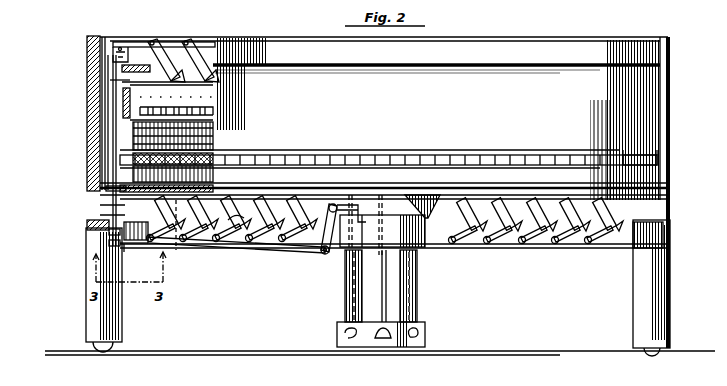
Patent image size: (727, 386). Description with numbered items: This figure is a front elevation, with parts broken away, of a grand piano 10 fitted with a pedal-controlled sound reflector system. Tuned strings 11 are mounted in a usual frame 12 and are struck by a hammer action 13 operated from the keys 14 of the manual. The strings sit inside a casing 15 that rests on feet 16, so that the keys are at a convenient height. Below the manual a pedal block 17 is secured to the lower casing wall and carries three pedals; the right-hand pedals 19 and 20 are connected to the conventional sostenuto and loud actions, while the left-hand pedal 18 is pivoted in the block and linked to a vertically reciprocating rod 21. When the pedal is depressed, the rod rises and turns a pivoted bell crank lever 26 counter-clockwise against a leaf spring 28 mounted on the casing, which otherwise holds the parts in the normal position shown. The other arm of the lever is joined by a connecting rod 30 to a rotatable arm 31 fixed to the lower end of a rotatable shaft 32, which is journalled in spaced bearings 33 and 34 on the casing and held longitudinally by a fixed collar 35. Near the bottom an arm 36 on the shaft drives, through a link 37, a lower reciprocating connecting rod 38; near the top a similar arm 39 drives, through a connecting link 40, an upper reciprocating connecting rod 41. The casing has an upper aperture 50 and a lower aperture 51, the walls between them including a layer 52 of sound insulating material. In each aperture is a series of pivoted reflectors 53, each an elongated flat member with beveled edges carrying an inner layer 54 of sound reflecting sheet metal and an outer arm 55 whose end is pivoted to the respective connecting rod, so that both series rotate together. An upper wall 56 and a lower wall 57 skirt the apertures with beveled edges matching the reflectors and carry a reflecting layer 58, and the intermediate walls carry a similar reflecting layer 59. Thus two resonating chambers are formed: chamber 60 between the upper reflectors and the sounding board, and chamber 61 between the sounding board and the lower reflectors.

The grand piano 10 is at (662, 125).
The tuned strings 11 is at (216, 93).
The frame 12 is at (110, 118).
The hammer action 13 is at (216, 157).
The keys 14 is at (442, 156).
The casing 15 is at (526, 38).
The feet 16 is at (86, 334).
The pedal block 17 is at (425, 330).
The left-hand pedal 18 is at (352, 347).
The pedal 19 is at (385, 347).
The pedal 20 is at (416, 347).
The vertically reciprocating rod 21 is at (348, 298).
The bell crank lever 26 is at (390, 225).
The leaf spring 28 is at (339, 199).
The connecting rod 30 is at (265, 256).
The rotatable arm 31 is at (108, 243).
The rotatable shaft 32 is at (100, 211).
The bearing 33 is at (105, 190).
The bearing 34 is at (101, 75).
The fixed collar 35 is at (130, 50).
The arm 36 is at (108, 234).
The link 37 is at (130, 249).
The reciprocating connecting rod 38 is at (538, 244).
The arm 39 is at (101, 53).
The connecting link 40 is at (128, 42).
The reciprocating connecting rod 41 is at (199, 42).
The upper aperture 50 is at (215, 71).
The lower aperture 51 is at (242, 214).
The layer of sound insulating material 52 is at (100, 36).
The reflector 53 is at (242, 45).
The layer of sound reflecting material 54 is at (167, 80).
The arm 55 is at (208, 53).
The upper wall 56 is at (136, 61).
The lower wall 57 is at (136, 231).
The layer of sound reflecting material 58 is at (171, 96).
The layer of sound reflecting material 59 is at (123, 97).
The resonating chamber 60 is at (110, 81).
The resonating chamber 61 is at (184, 254).